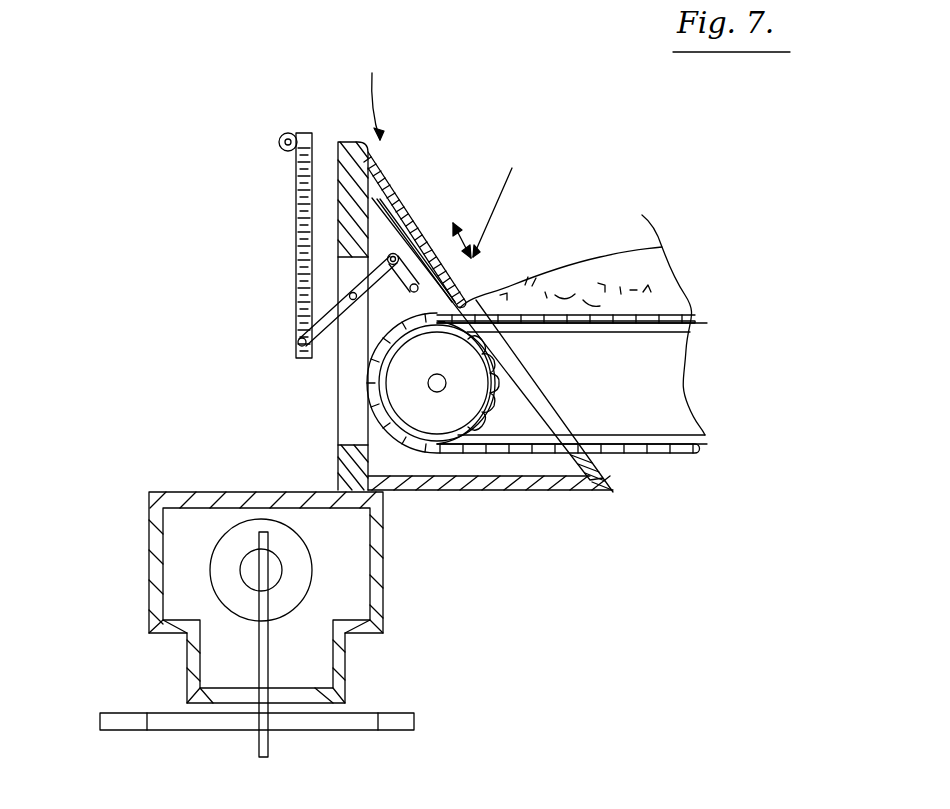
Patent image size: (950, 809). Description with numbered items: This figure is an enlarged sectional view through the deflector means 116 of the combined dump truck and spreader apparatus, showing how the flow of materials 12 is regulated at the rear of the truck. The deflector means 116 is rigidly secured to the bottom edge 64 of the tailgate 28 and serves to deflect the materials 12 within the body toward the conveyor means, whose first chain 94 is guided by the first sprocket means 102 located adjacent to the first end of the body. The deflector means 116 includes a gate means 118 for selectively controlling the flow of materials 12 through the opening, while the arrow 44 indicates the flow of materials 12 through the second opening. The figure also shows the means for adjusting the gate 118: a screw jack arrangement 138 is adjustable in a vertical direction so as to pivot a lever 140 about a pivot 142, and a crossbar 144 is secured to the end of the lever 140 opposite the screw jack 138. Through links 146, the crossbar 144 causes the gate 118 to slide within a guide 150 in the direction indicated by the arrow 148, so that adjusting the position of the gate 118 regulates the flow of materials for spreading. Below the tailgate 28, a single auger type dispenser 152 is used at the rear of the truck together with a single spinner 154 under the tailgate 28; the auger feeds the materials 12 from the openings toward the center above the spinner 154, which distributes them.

The materials 12 is at (595, 270).
The tailgate 28 is at (345, 140).
The arrow 44 is at (497, 268).
The bottom edge 64 is at (345, 457).
The first chain 94 is at (625, 442).
The first sprocket means 102 is at (430, 413).
The deflector means 116 is at (383, 95).
The gate means 118 is at (427, 227).
The screw jack arrangement 138 is at (279, 142).
The lever 140 is at (327, 322).
The pivot 142 is at (350, 297).
The crossbar 144 is at (388, 260).
The links 146 is at (408, 265).
The arrow 148 is at (502, 201).
The guide 150 is at (380, 197).
The auger type dispenser 152 is at (377, 587).
The spinner 154 is at (397, 719).